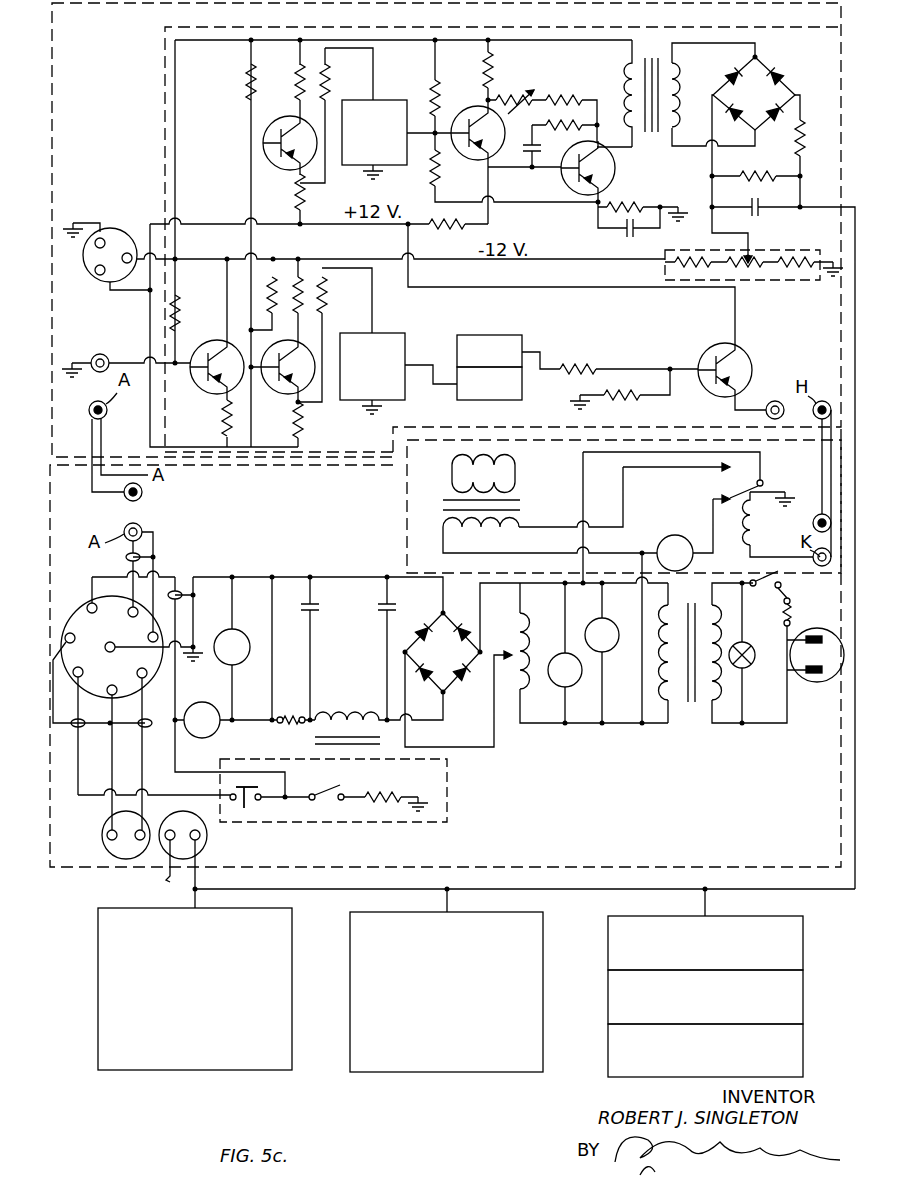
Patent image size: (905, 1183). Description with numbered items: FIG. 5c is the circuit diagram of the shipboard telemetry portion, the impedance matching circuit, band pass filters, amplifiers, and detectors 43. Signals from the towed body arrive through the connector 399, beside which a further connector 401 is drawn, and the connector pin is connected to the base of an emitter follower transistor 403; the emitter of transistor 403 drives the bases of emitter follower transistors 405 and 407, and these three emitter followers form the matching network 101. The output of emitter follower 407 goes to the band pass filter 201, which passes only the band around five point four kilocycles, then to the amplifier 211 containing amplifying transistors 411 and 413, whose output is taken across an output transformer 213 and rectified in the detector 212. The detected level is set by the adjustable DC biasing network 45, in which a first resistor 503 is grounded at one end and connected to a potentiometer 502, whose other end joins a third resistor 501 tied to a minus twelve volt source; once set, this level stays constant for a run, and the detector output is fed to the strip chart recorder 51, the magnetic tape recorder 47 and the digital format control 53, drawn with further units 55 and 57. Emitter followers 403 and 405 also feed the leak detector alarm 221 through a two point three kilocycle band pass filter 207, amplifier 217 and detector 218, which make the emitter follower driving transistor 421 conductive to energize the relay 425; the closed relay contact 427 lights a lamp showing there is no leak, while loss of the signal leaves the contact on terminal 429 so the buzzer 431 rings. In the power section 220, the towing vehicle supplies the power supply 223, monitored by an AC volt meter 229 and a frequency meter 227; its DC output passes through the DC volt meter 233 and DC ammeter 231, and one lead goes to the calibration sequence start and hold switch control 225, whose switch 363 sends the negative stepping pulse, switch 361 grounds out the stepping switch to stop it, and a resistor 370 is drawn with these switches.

The impedance matching circuit, band pass filters, amplifiers, and detectors 43 is at (106, 46).
The matching network 101 is at (165, 118).
The power input connector 401 is at (118, 230).
The emitter follower transistor 407 is at (262, 150).
The band pass filter 201 is at (388, 142).
The amplifying transistor 411 is at (477, 162).
The amplifying transistor 413 is at (561, 176).
The amplifier 211 is at (548, 100).
The detector 212 is at (786, 72).
The transformer 213 is at (652, 138).
The third resistor 501 is at (675, 261).
The potentiometer 502 is at (752, 258).
The first resistor 503 is at (790, 281).
The adjustable DC biasing network 45 is at (662, 268).
The emitter follower transistor 403 is at (205, 390).
The emitter follower transistor 405 is at (276, 390).
The band pass filter 207 is at (388, 345).
The detector 218 is at (492, 340).
The amplifier 217 is at (470, 392).
The emitter follower driving transistor 421 is at (752, 376).
The buzzer 431 is at (502, 491).
The leak detector alarm 221 is at (674, 501).
The terminal 429 is at (724, 473).
The relay contact 427 is at (722, 505).
The relay 425 is at (773, 518).
The connector 399 is at (72, 607).
The DC volt meter 233 is at (248, 646).
The power supply 223 is at (364, 662).
The DC ammeter 231 is at (218, 729).
The AC volt meter 229 is at (615, 647).
The frequency meter 227 is at (576, 687).
The switch 363 is at (232, 794).
The switch 361 is at (334, 792).
The resistor 370 is at (385, 793).
The calibration sequence start and hold switch control 225 is at (447, 808).
The output section 220 is at (652, 824).
The strip chart recorder 51 is at (207, 1009).
The magnetic tape recorder 47 is at (459, 1012).
The digital format control 53 is at (722, 954).
The block 55 is at (722, 1009).
The block 57 is at (722, 1062).